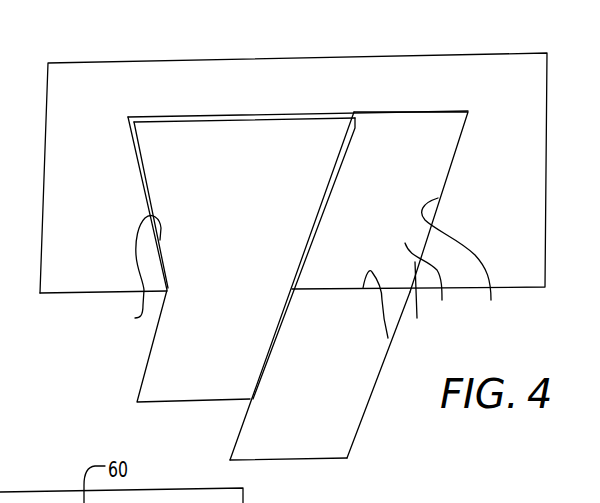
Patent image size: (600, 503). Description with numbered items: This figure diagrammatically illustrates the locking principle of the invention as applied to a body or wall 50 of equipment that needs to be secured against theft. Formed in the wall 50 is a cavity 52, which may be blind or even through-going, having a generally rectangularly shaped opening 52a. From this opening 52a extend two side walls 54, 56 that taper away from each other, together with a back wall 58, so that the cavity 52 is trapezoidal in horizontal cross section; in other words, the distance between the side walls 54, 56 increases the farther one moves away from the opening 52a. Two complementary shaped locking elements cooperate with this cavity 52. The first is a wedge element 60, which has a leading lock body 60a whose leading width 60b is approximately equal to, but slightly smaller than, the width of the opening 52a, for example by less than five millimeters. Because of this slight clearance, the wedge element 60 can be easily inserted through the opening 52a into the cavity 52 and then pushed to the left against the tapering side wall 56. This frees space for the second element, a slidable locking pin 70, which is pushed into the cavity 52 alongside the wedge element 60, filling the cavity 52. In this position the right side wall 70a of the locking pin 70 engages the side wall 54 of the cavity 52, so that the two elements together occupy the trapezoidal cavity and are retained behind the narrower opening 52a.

The body or wall 50 is at (88, 284).
The cavity 52 is at (430, 283).
The opening 52a is at (392, 335).
The side wall 54 is at (462, 262).
The side wall 56 is at (137, 273).
The back wall 58 is at (358, 251).
The wedge element 60 is at (288, 214).
The leading lock body 60a is at (352, 140).
The leading width 60b is at (240, 118).
The slidable locking pin 70 is at (324, 386).
The right side wall 70a is at (367, 402).